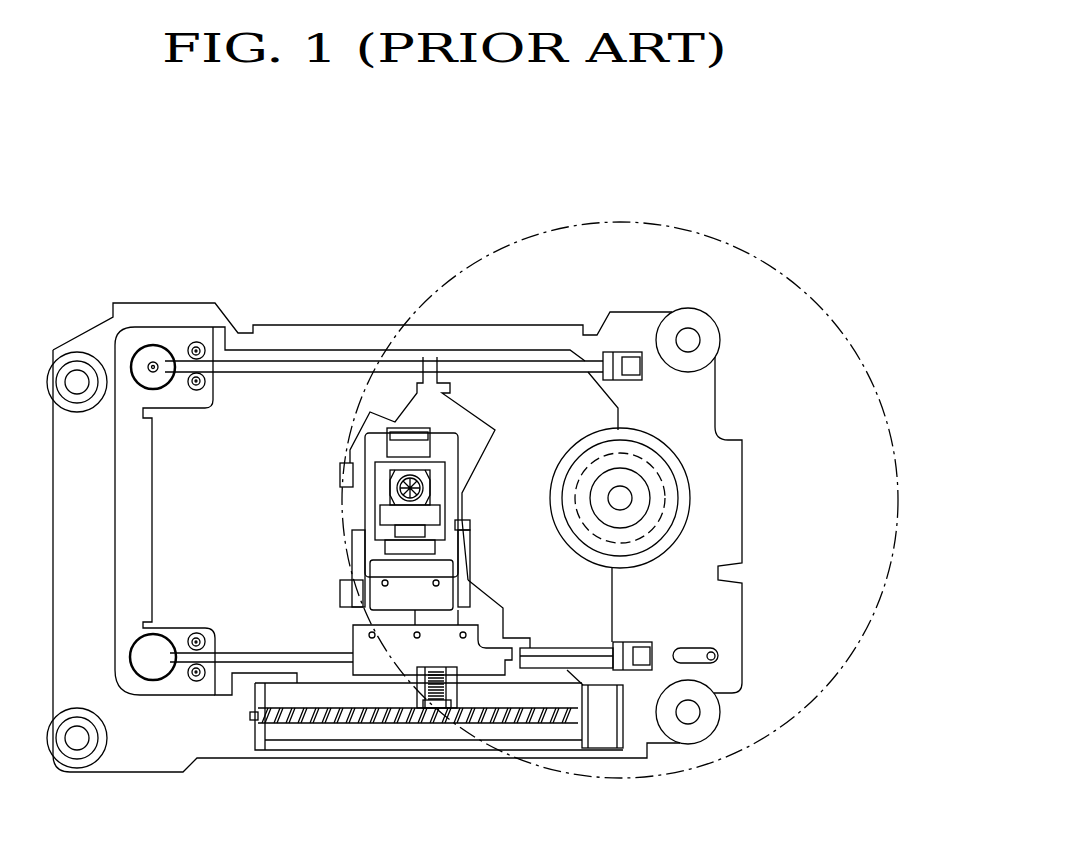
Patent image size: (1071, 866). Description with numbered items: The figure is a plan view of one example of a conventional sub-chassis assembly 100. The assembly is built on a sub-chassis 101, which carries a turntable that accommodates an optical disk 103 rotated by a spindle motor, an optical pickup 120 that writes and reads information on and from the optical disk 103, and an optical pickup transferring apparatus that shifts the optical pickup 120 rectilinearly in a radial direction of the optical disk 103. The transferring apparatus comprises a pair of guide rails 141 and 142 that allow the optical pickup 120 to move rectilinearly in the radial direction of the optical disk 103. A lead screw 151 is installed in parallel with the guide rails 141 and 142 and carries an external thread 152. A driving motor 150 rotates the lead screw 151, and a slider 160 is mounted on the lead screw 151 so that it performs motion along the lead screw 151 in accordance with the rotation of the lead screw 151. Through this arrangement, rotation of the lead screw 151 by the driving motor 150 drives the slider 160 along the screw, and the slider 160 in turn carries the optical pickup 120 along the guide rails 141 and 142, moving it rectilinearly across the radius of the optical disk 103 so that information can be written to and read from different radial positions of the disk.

The sub-chassis assembly 100 is at (124, 250).
The sub-chassis 101 is at (143, 757).
The optical disk 103 is at (629, 222).
The optical pickup 120 is at (370, 490).
The guide rail 141 is at (300, 360).
The guide rail 142 is at (549, 655).
The driving motor 150 is at (602, 735).
The lead screw 151 is at (362, 720).
The external thread 152 is at (413, 725).
The slider 160 is at (480, 668).